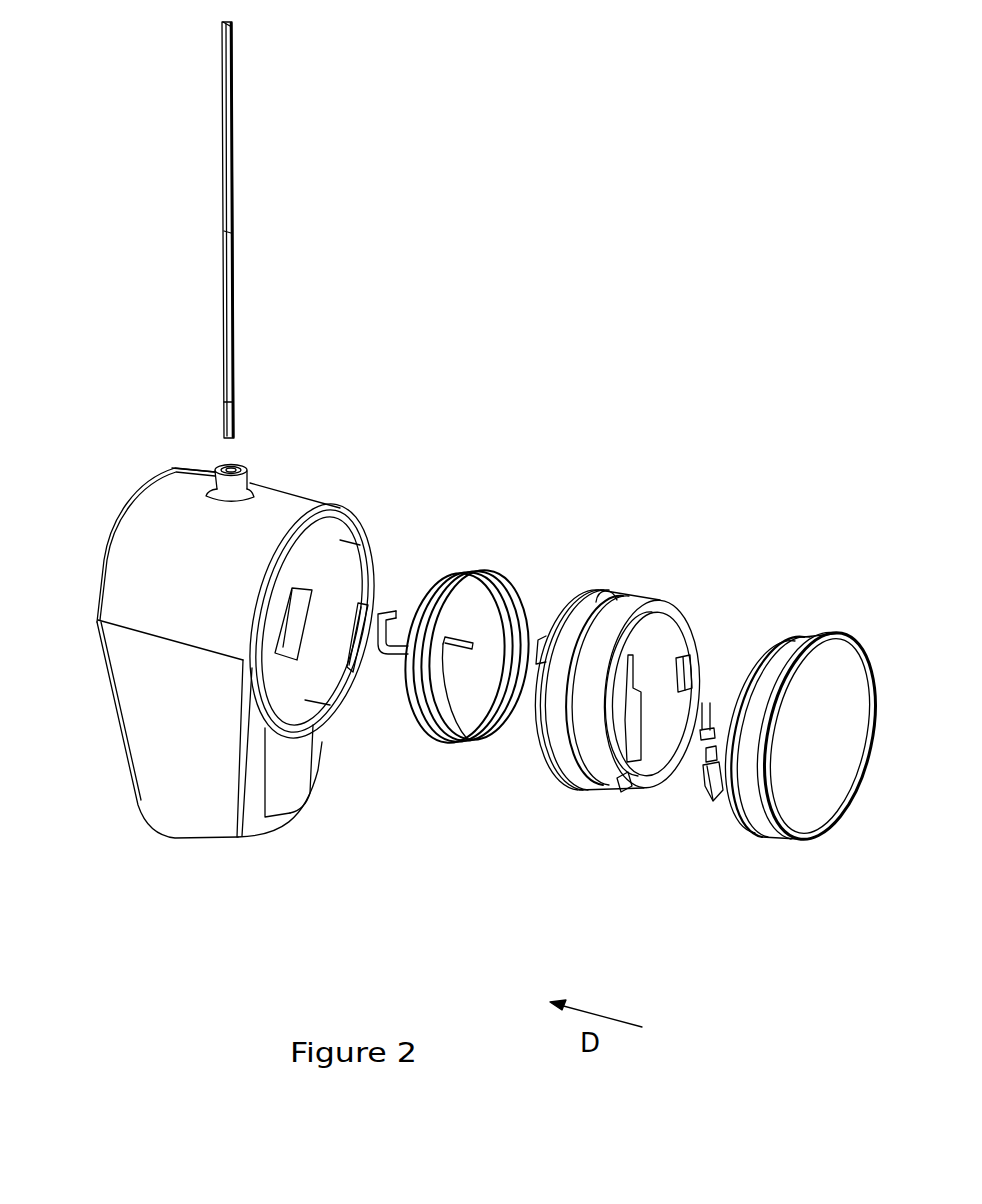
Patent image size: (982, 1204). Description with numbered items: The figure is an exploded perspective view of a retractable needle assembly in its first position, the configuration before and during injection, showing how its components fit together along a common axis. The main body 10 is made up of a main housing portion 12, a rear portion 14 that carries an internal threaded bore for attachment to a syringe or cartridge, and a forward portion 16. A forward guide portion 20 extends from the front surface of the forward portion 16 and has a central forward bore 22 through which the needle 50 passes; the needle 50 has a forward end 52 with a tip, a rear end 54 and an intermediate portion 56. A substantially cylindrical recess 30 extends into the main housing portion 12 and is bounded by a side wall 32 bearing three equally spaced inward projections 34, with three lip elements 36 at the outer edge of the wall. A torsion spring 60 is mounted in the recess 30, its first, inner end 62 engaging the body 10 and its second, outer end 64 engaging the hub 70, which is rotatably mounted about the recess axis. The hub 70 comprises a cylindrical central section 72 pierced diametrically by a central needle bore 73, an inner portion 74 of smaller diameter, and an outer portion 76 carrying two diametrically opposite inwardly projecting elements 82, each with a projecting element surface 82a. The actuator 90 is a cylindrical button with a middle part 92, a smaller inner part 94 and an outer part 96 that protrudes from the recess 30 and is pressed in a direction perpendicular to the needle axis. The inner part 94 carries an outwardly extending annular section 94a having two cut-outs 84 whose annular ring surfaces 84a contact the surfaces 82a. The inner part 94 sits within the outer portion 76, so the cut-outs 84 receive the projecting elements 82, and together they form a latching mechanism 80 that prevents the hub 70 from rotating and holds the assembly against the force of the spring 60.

The main body 10 is at (243, 647).
The main housing portion 12 is at (132, 573).
The rear portion 14 is at (168, 813).
The forward portion 16 is at (291, 517).
The forward guide portion 20 is at (172, 469).
The forward bore 22 is at (238, 464).
The recess 30 is at (354, 560).
The side wall 32 is at (323, 690).
The inward projection 34 is at (292, 640).
The lip element 36 is at (351, 662).
The needle 50 is at (240, 145).
The forward end 52 is at (226, 24).
The rear end 54 is at (227, 402).
The intermediate portion 56 is at (228, 231).
The torsion spring 60 is at (471, 597).
The first end 62 is at (400, 603).
The second end 64 is at (487, 600).
The hub 70 is at (599, 694).
The central section 72 is at (556, 758).
The central needle bore 73 is at (610, 677).
The inner portion 74 is at (537, 704).
The outer portion 76 is at (634, 790).
The latching mechanism 80 is at (684, 670).
The projecting element 82 is at (605, 727).
The projecting element surface 82a is at (680, 655).
The cut-out 84 is at (724, 779).
The annular ring surface 84a is at (700, 760).
The actuator 90 is at (781, 718).
The middle part 92 is at (758, 826).
The inner part 94 is at (740, 657).
The outwardly extending annular section 94a is at (722, 802).
The outer part 96 is at (813, 792).